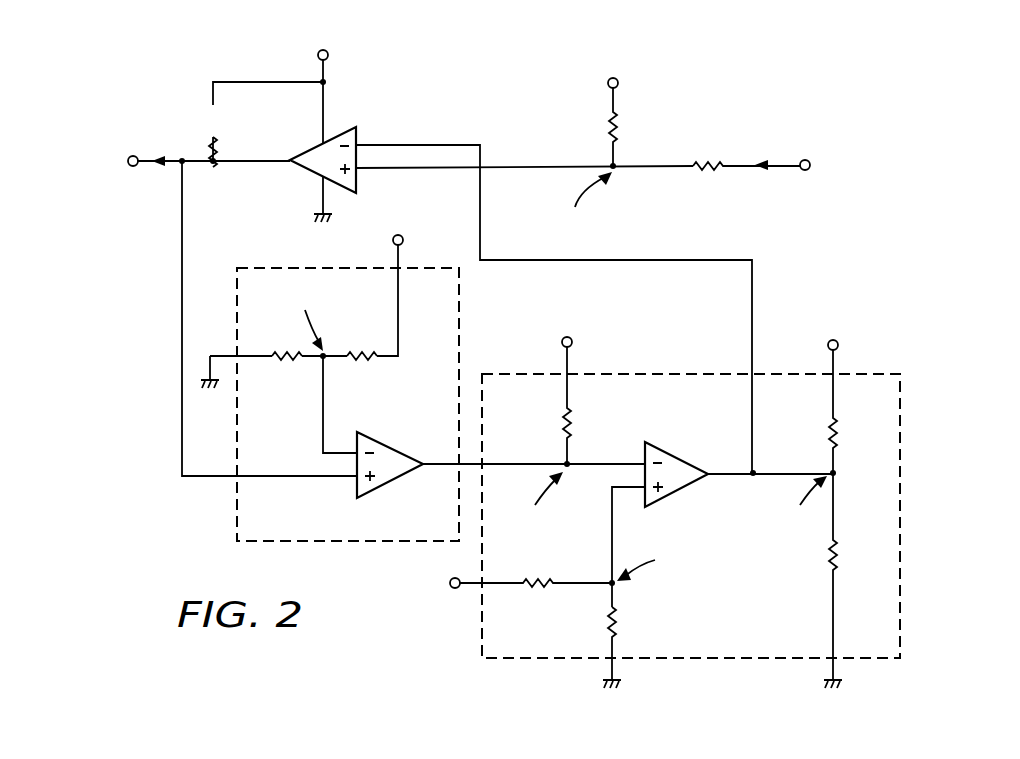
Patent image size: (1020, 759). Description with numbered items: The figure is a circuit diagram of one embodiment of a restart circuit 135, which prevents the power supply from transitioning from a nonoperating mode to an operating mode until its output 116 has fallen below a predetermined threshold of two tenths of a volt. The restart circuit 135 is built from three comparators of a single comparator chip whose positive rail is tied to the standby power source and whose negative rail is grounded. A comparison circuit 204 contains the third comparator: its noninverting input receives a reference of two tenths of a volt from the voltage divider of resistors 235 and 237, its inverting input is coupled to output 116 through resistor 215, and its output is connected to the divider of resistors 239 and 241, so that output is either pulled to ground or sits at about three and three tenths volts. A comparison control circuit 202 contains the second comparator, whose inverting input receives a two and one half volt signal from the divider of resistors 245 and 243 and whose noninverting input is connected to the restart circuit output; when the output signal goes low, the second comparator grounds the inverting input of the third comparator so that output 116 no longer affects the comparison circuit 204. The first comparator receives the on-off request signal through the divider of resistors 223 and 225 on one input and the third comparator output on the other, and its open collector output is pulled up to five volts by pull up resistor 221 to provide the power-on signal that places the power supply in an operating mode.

The restart circuit 135 is at (750, 65).
The pull up resistor 221 is at (208, 118).
The resistor 223 is at (608, 128).
The resistor 225 is at (708, 172).
The comparison control circuit 202 is at (237, 498).
The resistor 243 is at (285, 362).
The resistor 245 is at (360, 362).
The output 116 is at (573, 345).
The resistor 215 is at (563, 427).
The resistor 235 is at (533, 590).
The resistor 237 is at (618, 626).
The resistor 239 is at (828, 430).
The resistor 241 is at (828, 558).
The comparison circuit 204 is at (733, 659).